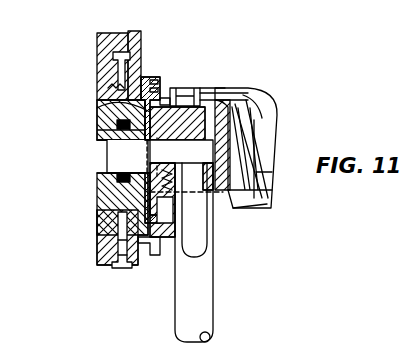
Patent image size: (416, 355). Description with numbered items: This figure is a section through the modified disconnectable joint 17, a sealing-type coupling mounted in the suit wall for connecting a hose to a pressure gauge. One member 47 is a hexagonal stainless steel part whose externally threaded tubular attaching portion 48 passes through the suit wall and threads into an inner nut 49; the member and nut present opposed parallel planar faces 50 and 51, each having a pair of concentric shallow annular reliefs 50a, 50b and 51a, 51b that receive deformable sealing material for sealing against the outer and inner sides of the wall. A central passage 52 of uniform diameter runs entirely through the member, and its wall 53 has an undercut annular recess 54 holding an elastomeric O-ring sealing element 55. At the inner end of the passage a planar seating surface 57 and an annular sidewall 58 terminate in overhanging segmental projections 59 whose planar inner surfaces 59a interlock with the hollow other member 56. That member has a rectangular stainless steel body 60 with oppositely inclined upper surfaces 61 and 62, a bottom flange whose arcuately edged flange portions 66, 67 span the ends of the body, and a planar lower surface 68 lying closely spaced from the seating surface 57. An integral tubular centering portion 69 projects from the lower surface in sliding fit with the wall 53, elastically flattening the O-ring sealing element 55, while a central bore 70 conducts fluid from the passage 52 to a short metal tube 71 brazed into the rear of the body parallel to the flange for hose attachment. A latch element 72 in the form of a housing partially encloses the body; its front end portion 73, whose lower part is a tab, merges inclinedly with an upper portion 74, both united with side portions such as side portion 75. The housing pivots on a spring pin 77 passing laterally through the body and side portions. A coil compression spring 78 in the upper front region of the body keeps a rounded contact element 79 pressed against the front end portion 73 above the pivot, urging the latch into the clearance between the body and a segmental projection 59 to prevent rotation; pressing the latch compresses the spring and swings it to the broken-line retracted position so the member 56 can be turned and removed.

The modified disconnectable joint 17 is at (112, 318).
The member 47 is at (134, 32).
The attaching portion 48 is at (97, 105).
The inner nut 49 is at (115, 232).
The planar face 50 is at (118, 33).
The annular relief 50a is at (100, 49).
The annular relief 50b is at (100, 72).
The planar face 51 is at (124, 268).
The annular relief 51a is at (115, 258).
The annular relief 51b is at (115, 243).
The central passage 52 is at (112, 176).
The wall 53 is at (114, 128).
The annular recess 54 is at (112, 146).
The sealing element 55 is at (97, 208).
The hollow other member 56 is at (233, 262).
The seating surface 57 is at (156, 250).
The annular sidewall 58 is at (150, 78).
The segmental projections 59 is at (165, 98).
The planar inner surfaces 59a is at (153, 77).
The body 60 is at (230, 150).
The inclined upper surface 61 is at (245, 131).
The inclined upper surface 62 is at (252, 186).
The arcuately edged flange portion 66 is at (175, 98).
The arcuately edged flange portion 67 is at (188, 250).
The planar lower surface 68 is at (110, 100).
The tubular centering portion 69 is at (132, 157).
The central bore 70 is at (107, 166).
The metal tube 71 is at (212, 320).
The latch element 72 is at (252, 82).
The front end portion 73 is at (210, 97).
The upper portion 74 is at (242, 167).
The side portion 75 is at (235, 110).
The spring pin 77 is at (181, 172).
The coil compression spring 78 is at (255, 97).
The contact element 79 is at (200, 90).